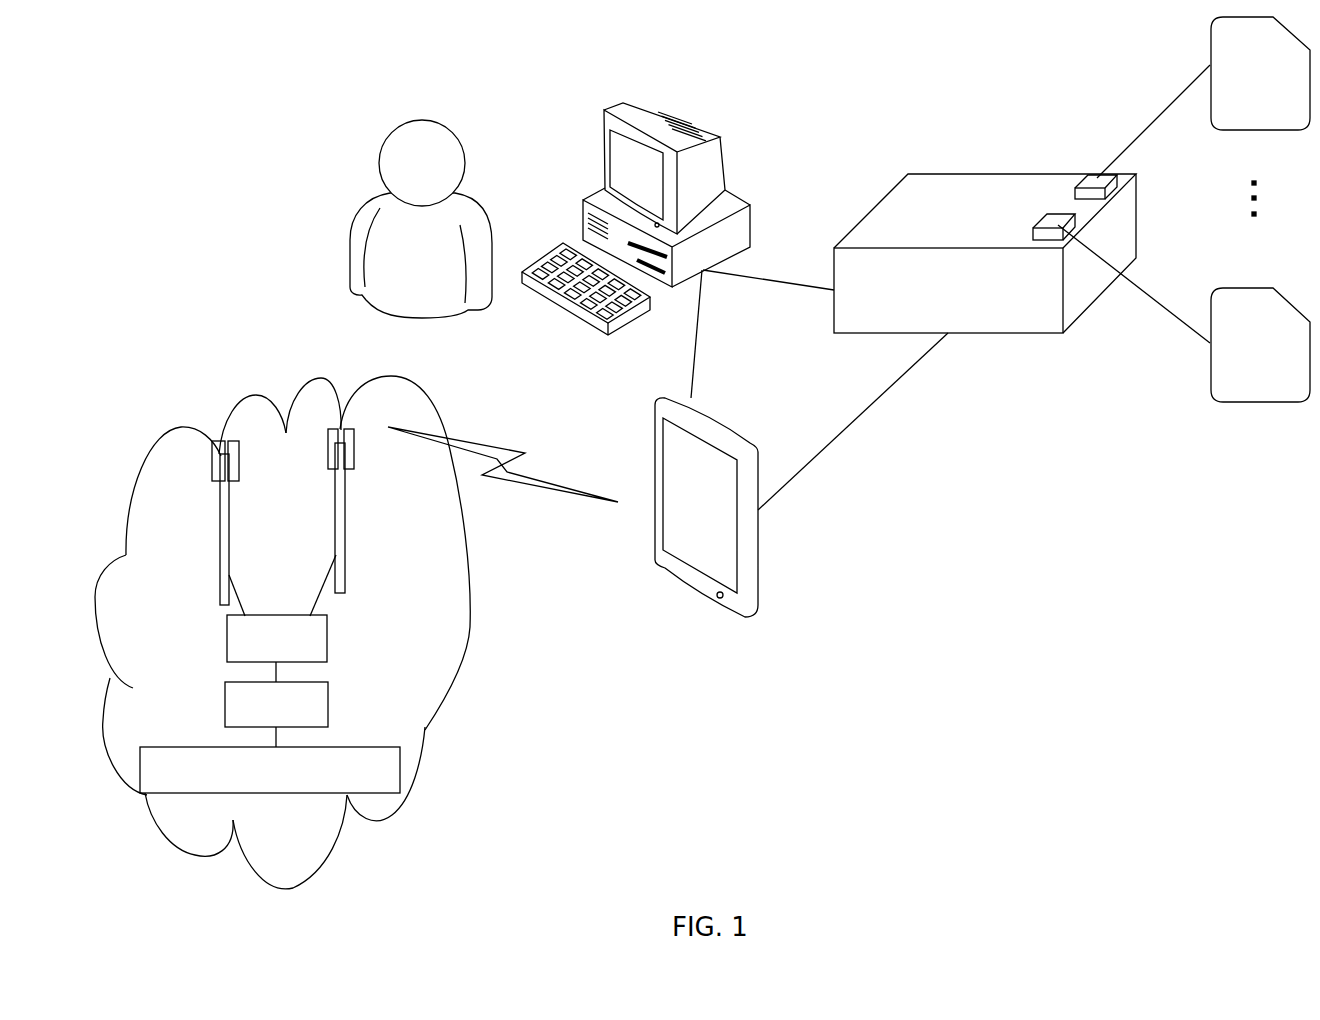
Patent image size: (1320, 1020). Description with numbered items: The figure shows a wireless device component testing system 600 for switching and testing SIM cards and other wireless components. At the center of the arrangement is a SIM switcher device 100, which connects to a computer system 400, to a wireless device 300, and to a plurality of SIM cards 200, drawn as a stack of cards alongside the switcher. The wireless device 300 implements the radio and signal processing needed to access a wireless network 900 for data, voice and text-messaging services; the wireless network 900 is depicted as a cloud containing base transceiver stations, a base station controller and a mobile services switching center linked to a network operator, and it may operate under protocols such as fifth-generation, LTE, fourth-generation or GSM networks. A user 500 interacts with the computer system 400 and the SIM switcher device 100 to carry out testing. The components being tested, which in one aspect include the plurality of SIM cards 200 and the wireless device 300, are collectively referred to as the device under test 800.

The SIM switcher device 100 is at (985, 253).
The plurality of SIM cards 200 is at (1260, 209).
The wireless device 300 is at (693, 518).
The computer system 400 is at (590, 318).
The user 500 is at (385, 307).
The wireless device component testing system 600 is at (990, 108).
The device under test (DUT) 800 is at (1050, 542).
The wireless network 900 is at (415, 615).